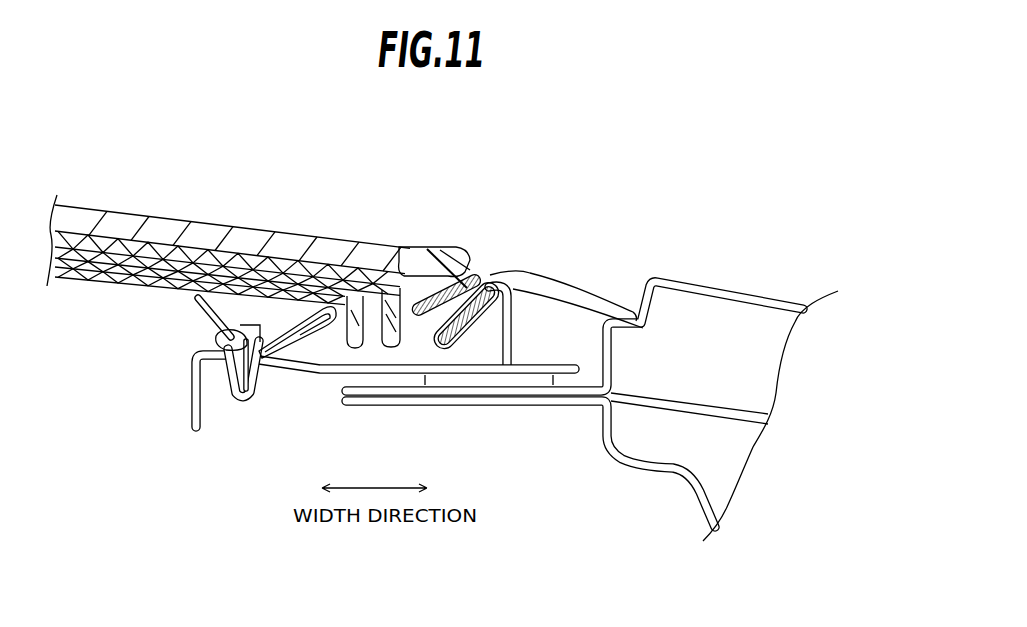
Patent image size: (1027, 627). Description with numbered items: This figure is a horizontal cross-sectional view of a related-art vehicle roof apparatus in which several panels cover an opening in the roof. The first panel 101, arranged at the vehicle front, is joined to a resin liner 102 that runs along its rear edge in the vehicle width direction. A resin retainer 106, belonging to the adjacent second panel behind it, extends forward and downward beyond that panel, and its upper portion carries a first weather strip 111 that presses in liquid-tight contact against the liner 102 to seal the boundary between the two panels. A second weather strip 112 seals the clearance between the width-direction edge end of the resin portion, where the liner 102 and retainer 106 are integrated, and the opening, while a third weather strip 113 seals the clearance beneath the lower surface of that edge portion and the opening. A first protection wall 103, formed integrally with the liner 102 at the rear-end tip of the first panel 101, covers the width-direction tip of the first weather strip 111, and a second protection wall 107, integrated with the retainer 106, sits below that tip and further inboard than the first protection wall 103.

The first panel 101 is at (168, 221).
The liner 102 is at (279, 258).
The first protection wall 103 is at (381, 350).
The retainer 106 is at (73, 278).
The second protection wall 107 is at (347, 346).
The first weather strip 111 is at (112, 268).
The second weather strip 112 is at (488, 275).
The third weather strip 113 is at (212, 318).